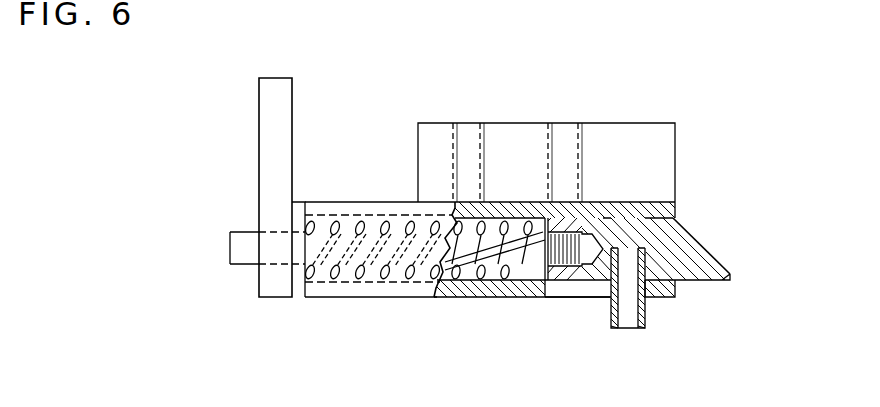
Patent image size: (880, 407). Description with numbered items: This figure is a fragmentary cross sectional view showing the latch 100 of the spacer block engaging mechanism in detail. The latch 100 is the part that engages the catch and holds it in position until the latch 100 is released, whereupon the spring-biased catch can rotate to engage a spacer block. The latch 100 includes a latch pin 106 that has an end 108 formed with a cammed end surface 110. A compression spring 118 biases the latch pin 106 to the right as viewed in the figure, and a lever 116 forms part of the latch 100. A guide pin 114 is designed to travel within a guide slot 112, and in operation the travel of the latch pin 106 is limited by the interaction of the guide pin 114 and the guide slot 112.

The latch 100 is at (518, 305).
The latch pin 106 is at (672, 239).
The end 108 is at (730, 276).
The cammed end surface 110 is at (700, 254).
The guide slot 112 is at (572, 297).
The guide pin 114 is at (645, 316).
The lever 116 is at (289, 106).
The compression spring 118 is at (380, 224).